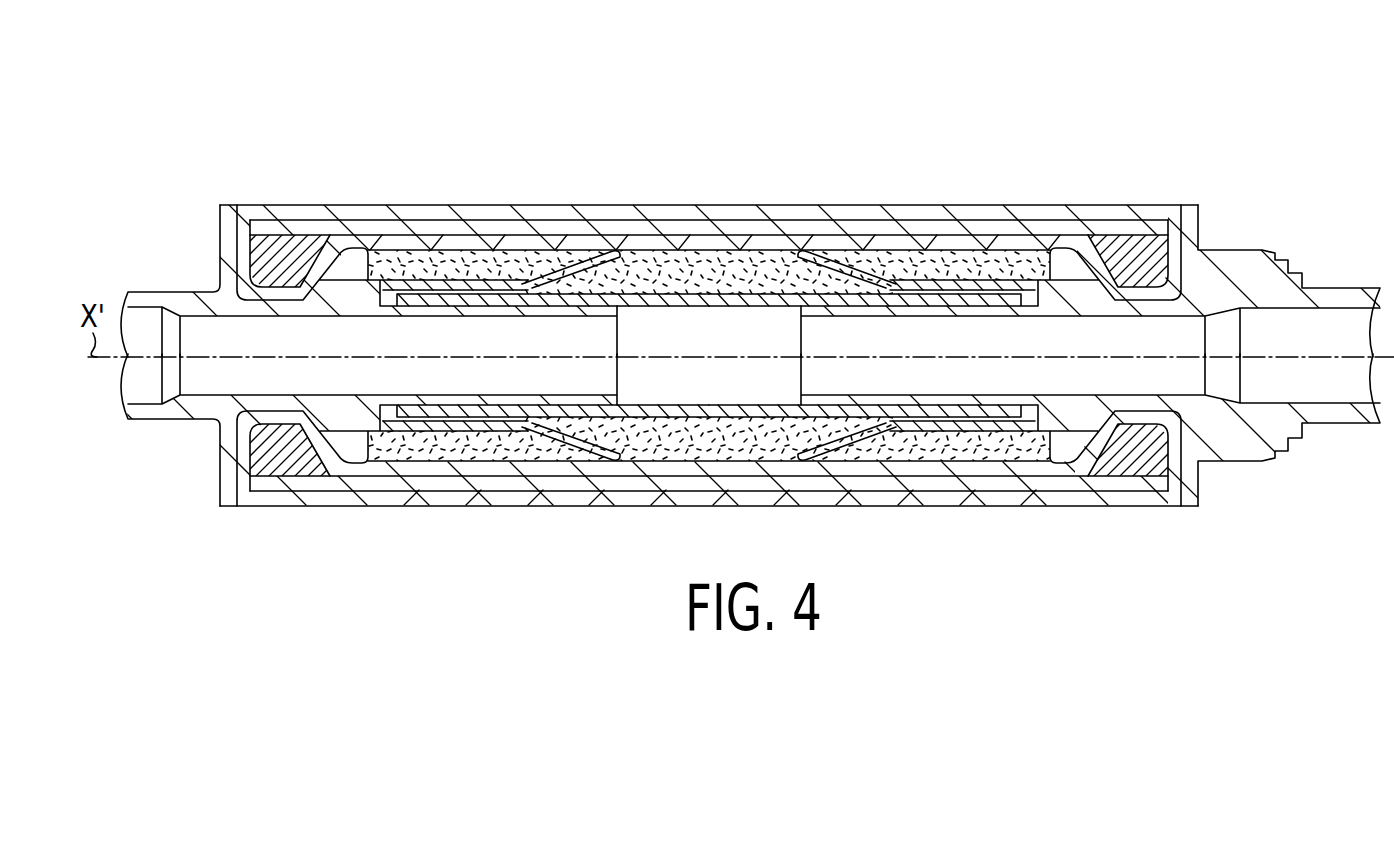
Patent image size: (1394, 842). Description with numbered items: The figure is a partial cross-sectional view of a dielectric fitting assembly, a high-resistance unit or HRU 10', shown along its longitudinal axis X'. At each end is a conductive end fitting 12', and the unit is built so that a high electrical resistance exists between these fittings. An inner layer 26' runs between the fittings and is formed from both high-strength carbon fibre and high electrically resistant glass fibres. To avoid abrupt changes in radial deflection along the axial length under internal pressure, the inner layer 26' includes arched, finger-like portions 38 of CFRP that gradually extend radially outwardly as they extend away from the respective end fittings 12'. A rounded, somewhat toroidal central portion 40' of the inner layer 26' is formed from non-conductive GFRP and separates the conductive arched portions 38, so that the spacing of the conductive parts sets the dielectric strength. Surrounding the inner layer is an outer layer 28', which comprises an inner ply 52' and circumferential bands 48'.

The HRU 10' is at (709, 255).
The end fitting 12' is at (750, 355).
The inner layer 26' is at (709, 219).
The outer layer 28' is at (717, 303).
The arched portions 38 is at (585, 262).
The central portion 40' is at (709, 488).
The circumferential bands 48' is at (707, 314).
The inner ply 52' is at (714, 323).